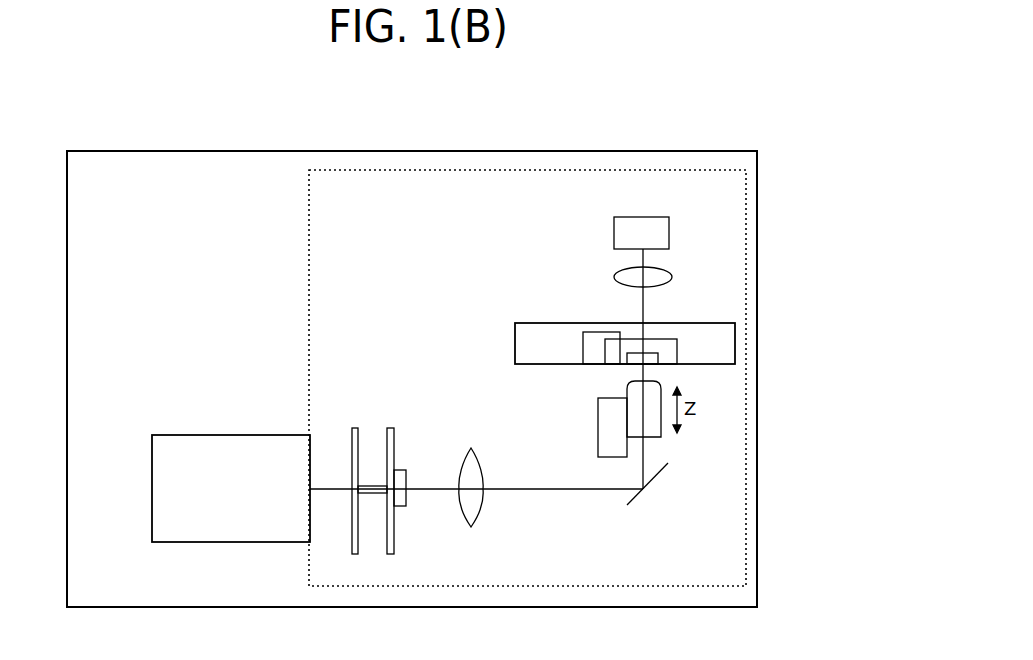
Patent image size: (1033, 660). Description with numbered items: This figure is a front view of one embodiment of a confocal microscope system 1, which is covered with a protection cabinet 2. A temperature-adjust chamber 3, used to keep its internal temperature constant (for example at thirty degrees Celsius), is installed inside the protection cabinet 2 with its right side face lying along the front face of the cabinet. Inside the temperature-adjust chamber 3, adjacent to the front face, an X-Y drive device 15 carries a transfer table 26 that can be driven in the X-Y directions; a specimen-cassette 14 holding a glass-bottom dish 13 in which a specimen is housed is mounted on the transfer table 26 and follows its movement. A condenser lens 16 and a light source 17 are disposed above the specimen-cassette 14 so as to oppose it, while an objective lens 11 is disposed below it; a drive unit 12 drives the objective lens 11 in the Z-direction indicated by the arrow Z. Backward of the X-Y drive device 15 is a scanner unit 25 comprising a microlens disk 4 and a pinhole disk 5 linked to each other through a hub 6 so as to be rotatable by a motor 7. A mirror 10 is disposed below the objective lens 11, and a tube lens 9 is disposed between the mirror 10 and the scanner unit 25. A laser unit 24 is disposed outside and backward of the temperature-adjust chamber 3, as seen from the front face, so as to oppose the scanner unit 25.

The confocal microscope system 1 is at (228, 128).
The protection cabinet 2 is at (452, 151).
The temperature-adjust chamber 3 is at (603, 171).
The microlens disk 4 is at (356, 428).
The pinhole disk 5 is at (391, 428).
The hub 6 is at (376, 494).
The motor 7 is at (403, 506).
The tube lens 9 is at (471, 448).
The mirror 10 is at (656, 478).
The objective lens 11 is at (627, 389).
The drive unit 12 is at (598, 414).
The glass-bottom dish 13 is at (656, 352).
The specimen-cassette 14 is at (613, 336).
The X-Y drive device 15 is at (515, 350).
The condenser lens 16 is at (620, 268).
The light source 17 is at (614, 230).
The laser unit 24 is at (187, 543).
The scanner unit 25 is at (413, 568).
The transfer table 26 is at (583, 342).